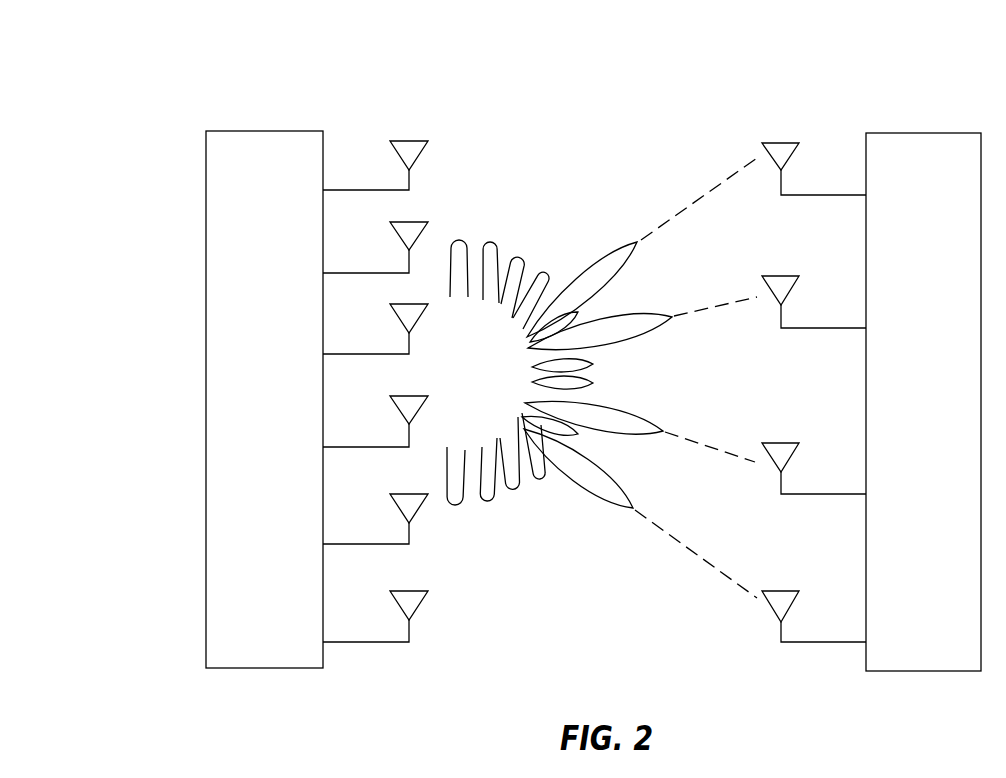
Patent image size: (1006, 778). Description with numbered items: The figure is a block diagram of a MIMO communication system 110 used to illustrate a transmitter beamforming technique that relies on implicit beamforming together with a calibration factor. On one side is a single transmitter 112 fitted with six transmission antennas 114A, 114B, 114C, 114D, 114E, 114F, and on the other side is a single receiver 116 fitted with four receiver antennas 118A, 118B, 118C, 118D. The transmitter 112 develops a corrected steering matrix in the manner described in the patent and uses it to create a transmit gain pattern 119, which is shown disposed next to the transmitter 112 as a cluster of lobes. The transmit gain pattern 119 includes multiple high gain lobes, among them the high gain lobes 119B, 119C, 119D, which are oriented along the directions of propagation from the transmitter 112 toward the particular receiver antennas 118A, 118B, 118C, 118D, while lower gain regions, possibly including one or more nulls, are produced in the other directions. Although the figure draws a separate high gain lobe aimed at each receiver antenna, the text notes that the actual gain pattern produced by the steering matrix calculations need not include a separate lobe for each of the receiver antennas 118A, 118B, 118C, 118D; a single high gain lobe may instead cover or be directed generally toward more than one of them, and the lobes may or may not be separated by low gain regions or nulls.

The MIMO communication system 110 is at (662, 61).
The transmitter 112 is at (262, 128).
The transmission antenna 114A is at (388, 143).
The transmission antenna 114B is at (388, 224).
The transmission antenna 114C is at (388, 306).
The transmission antenna 114D is at (388, 398).
The transmission antenna 114E is at (388, 496).
The transmission antenna 114F is at (388, 593).
The receiver 116 is at (927, 132).
The receiver antenna 118A is at (800, 145).
The receiver antenna 118B is at (800, 278).
The receiver antenna 118C is at (800, 445).
The receiver antenna 118D is at (800, 593).
The transmit gain pattern 119 is at (559, 340).
The high gain lobe 119B is at (607, 252).
The high gain lobe 119C is at (632, 410).
The high gain lobe 119D is at (628, 487).